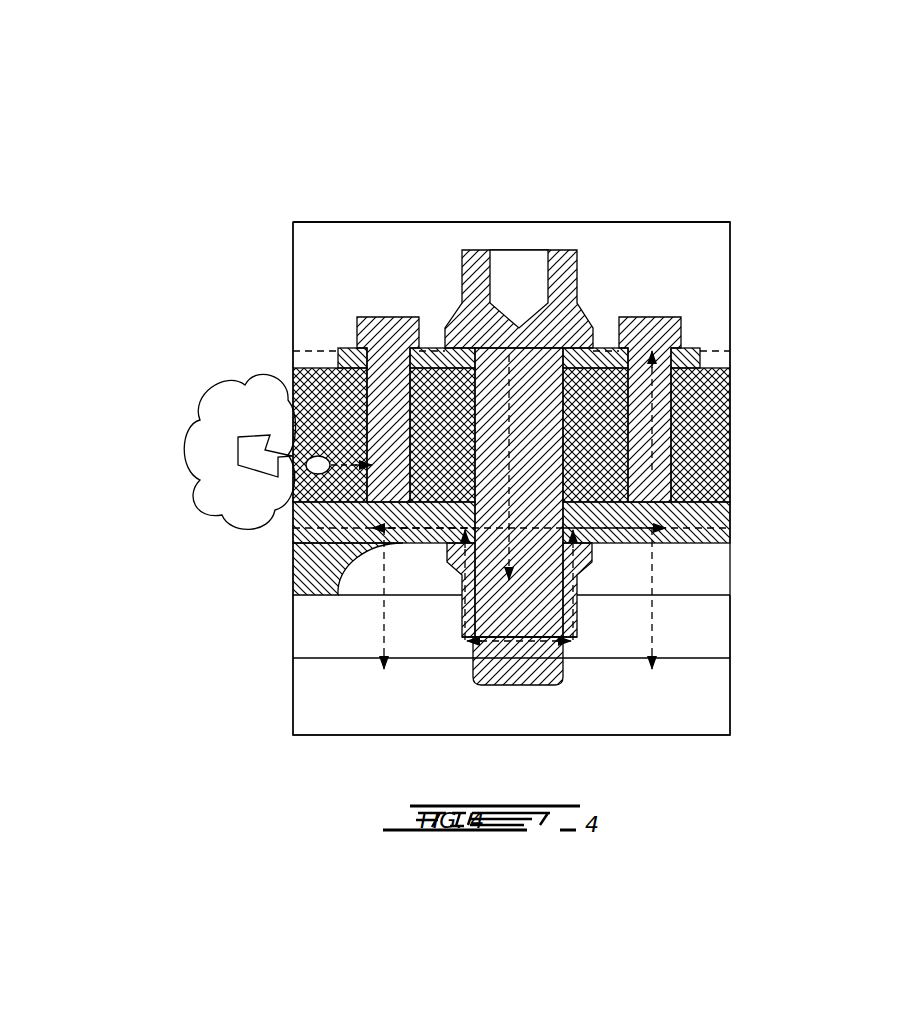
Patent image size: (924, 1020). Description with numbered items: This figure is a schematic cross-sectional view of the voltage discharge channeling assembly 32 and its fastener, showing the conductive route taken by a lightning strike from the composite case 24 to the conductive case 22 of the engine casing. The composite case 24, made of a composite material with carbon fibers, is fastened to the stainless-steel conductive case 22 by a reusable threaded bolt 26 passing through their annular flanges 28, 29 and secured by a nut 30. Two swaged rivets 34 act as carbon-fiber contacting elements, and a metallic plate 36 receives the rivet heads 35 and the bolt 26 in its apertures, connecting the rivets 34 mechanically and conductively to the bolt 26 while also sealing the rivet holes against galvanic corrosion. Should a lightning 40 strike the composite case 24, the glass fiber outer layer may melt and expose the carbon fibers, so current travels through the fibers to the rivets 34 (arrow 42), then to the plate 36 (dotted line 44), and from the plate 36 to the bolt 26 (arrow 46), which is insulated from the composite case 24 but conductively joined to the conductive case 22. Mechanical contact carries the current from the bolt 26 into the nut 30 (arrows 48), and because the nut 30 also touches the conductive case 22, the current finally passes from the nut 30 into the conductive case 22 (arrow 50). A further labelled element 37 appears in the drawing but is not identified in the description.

The conductive case 22 is at (700, 690).
The composite case 24 is at (683, 253).
The bolt 26 is at (465, 275).
The flange 28 is at (705, 520).
The flange 29 is at (733, 433).
The nut 30 is at (567, 583).
The voltage discharge channeling assembly 32 is at (152, 158).
The swaged rivet 34 is at (330, 368).
The rivet head 35 is at (384, 330).
The metallic plate 36 is at (608, 348).
The joint region 37 is at (298, 203).
The lightning 40 is at (213, 432).
The arrow 42 is at (297, 407).
The dotted line 44 is at (431, 347).
The arrow 46 is at (560, 483).
The arrows 48 is at (506, 643).
The arrow 50 is at (335, 548).